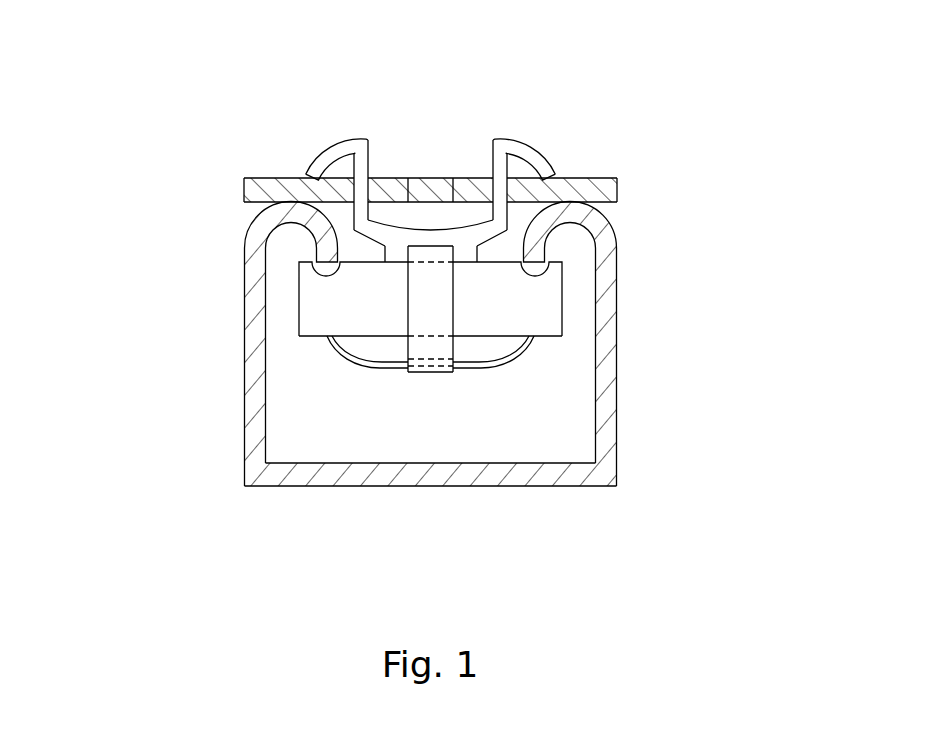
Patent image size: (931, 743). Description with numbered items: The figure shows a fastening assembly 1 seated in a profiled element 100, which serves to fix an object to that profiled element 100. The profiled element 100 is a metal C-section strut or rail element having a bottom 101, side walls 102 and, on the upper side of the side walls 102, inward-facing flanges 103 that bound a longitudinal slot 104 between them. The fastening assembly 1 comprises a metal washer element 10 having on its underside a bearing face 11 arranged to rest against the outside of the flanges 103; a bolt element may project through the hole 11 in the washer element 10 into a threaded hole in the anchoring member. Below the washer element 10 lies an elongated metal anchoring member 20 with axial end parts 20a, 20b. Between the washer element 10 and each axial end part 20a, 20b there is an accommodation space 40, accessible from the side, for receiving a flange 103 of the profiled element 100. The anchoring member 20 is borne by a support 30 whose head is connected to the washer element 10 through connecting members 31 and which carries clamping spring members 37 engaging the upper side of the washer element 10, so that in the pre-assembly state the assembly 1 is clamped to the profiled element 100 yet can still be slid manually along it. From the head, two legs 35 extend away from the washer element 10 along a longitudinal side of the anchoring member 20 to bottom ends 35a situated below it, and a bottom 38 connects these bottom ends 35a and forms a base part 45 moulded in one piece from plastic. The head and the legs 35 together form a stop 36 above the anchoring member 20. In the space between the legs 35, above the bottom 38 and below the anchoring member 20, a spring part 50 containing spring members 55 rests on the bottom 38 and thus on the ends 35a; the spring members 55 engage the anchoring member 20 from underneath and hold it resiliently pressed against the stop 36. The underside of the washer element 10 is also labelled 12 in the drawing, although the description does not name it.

The fastening assembly 1 is at (530, 100).
The washer element 10 is at (603, 183).
The bearing face / hole 11 is at (423, 190).
The underside of plate 12 is at (347, 195).
The anchoring member 20 is at (471, 322).
The axial end part 20a is at (388, 323).
The axial end part 20b is at (543, 323).
The support 30 is at (490, 176).
The connecting members 31 is at (374, 175).
The legs 35 is at (427, 310).
The bottom end 35a is at (430, 395).
The stop 36 is at (463, 263).
The clamping spring members 37 is at (338, 158).
The bottom 38 is at (420, 378).
The accommodation space 40 is at (367, 250).
The base part 45 is at (428, 250).
The spring part 50 is at (483, 375).
The spring members 55 is at (367, 367).
The profiled element 100 is at (652, 372).
The bottom 101 is at (310, 482).
The side walls 102 is at (255, 338).
The flanges 103 is at (320, 243).
The longitudinal slot 104 is at (247, 300).